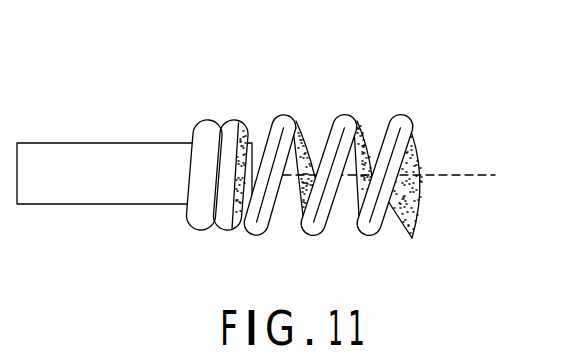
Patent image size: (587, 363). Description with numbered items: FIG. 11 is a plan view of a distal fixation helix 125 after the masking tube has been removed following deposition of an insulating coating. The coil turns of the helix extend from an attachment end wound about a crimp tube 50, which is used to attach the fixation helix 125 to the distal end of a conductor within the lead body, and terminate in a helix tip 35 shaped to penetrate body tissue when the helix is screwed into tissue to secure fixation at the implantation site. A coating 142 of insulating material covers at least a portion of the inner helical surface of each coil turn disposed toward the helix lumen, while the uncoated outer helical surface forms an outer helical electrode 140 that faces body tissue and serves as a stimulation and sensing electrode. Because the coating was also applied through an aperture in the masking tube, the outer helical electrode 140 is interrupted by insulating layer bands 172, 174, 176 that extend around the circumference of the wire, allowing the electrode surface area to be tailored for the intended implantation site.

The crimp tube 50 is at (50, 157).
The fixation helix 125 is at (340, 157).
The outer helical electrode 140 is at (369, 177).
The insulating layer band 172 is at (284, 114).
The insulating layer band 174 is at (345, 114).
The insulating layer band 176 is at (401, 114).
The coating 142 is at (412, 185).
The helix tip 35 is at (410, 234).